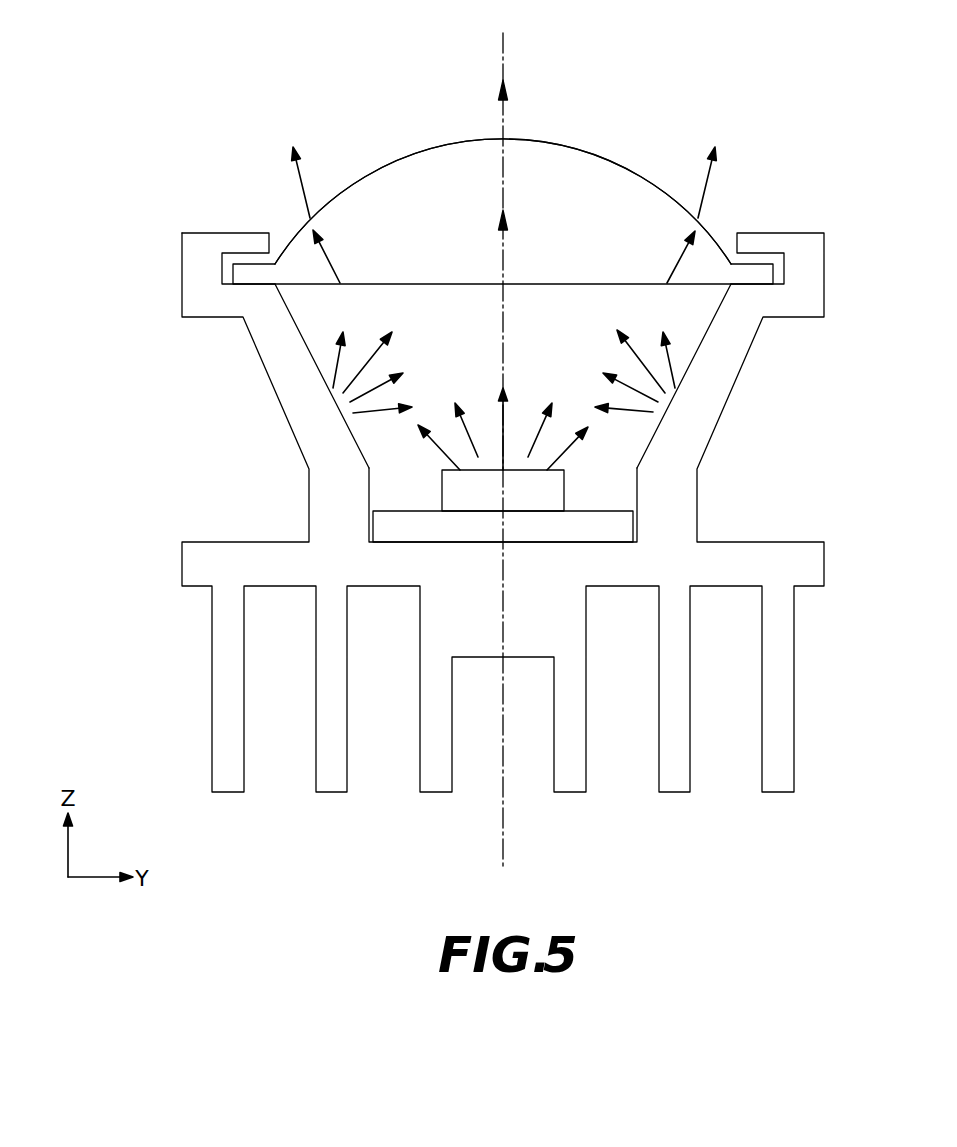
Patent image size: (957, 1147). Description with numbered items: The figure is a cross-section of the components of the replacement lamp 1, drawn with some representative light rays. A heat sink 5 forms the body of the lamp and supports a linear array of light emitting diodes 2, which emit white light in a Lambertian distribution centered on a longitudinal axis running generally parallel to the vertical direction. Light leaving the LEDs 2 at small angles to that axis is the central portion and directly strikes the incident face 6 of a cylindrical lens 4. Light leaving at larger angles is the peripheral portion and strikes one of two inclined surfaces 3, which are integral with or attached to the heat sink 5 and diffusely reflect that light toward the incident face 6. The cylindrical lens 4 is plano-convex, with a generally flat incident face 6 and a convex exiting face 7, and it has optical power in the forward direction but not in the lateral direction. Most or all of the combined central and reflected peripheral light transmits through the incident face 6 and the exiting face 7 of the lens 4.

The lamp 1 is at (320, 68).
The light emitting diodes 2 is at (555, 487).
The inclined surfaces 3 is at (309, 355).
The cylindrical lens 4 is at (612, 172).
The heat sink 5 is at (740, 340).
The incident face 6 is at (562, 287).
The exiting face 7 is at (550, 142).